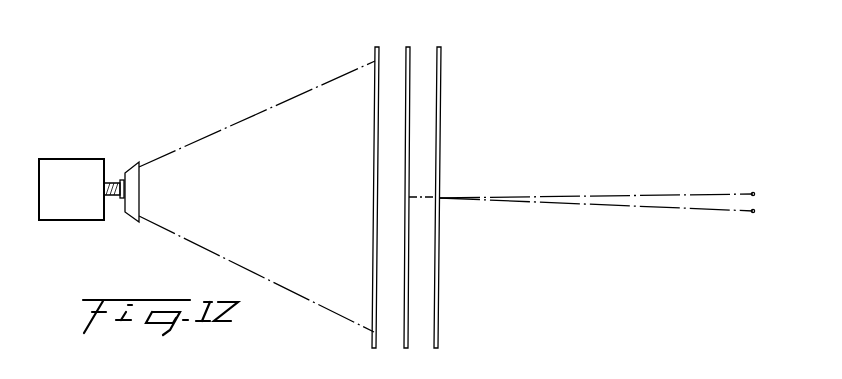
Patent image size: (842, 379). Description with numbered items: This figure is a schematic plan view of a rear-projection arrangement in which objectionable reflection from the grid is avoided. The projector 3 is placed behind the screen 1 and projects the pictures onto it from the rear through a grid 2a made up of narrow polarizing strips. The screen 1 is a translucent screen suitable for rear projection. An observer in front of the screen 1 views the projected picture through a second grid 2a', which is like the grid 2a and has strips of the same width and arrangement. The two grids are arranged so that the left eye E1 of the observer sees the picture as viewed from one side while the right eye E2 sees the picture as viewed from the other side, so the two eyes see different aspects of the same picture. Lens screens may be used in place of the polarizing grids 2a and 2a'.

The projector 3 is at (64, 222).
The grid 2a is at (353, 188).
The screen 1 is at (406, 48).
The second grid 2a' is at (463, 188).
The right eye E2 is at (754, 190).
The left eye E1 is at (753, 214).